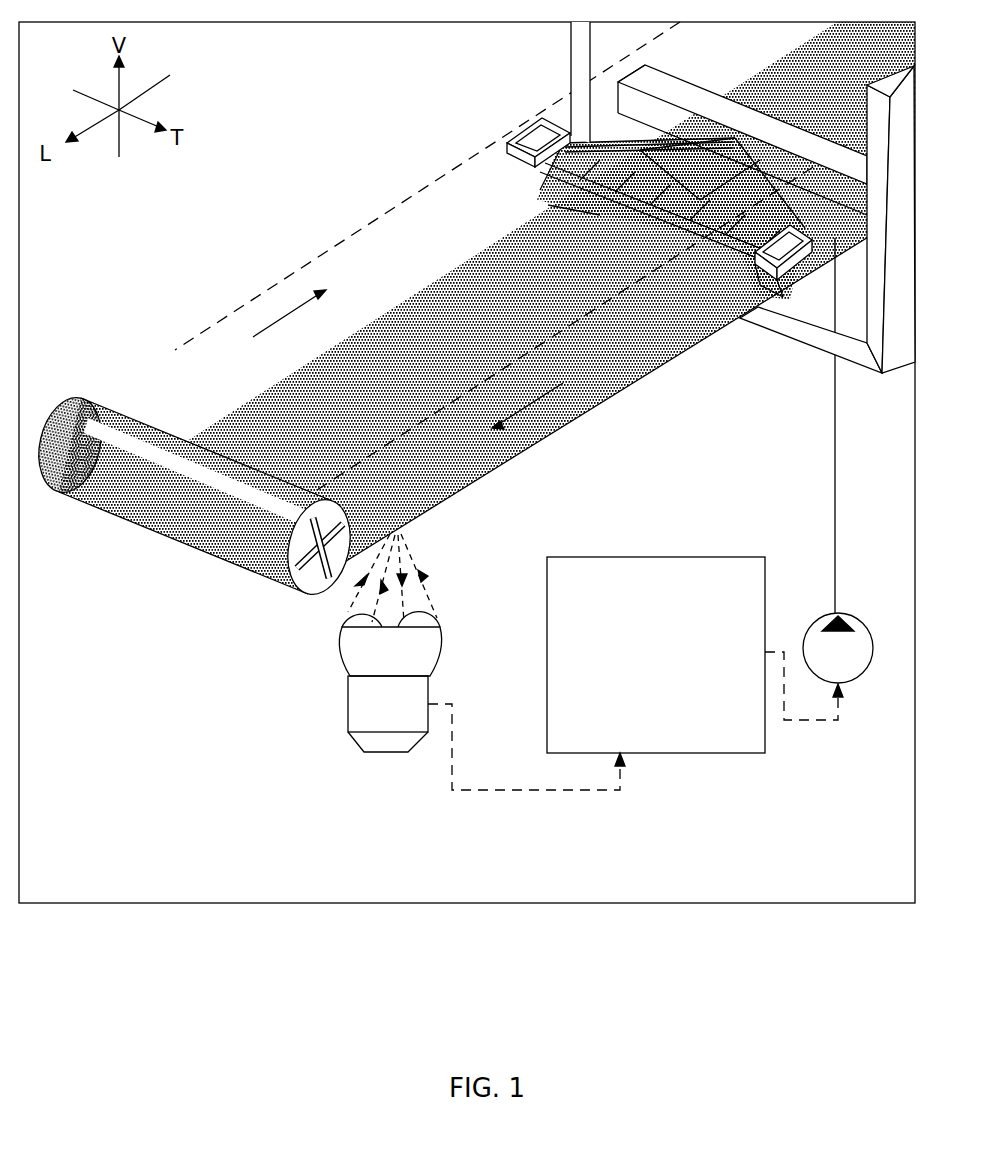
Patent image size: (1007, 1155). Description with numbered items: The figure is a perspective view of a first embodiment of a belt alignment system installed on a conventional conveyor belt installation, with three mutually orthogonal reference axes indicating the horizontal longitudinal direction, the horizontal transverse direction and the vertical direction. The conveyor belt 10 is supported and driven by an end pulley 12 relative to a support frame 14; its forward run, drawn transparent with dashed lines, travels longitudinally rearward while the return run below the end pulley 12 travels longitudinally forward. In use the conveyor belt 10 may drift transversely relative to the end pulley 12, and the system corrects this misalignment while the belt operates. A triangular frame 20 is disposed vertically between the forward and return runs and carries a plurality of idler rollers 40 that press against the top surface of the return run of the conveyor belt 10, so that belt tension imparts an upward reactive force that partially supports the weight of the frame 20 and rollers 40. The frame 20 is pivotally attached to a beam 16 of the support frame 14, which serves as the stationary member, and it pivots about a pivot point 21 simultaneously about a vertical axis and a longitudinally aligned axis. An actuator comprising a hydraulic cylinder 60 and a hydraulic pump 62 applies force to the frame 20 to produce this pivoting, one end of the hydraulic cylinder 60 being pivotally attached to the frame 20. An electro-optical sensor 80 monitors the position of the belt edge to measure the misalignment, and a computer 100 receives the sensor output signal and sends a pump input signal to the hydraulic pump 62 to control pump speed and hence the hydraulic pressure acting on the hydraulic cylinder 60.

The conveyor belt 10 is at (183, 347).
The end pulley 12 is at (67, 400).
The support frame 14 is at (569, 44).
The beam 16 is at (677, 78).
The frame 20 is at (538, 170).
The pivot point 21 is at (727, 147).
The idler rollers 40 is at (598, 213).
The hydraulic cylinder 60 is at (832, 228).
The hydraulic pump 62 is at (867, 632).
The sensor 80 is at (340, 664).
The computer 100 is at (630, 556).